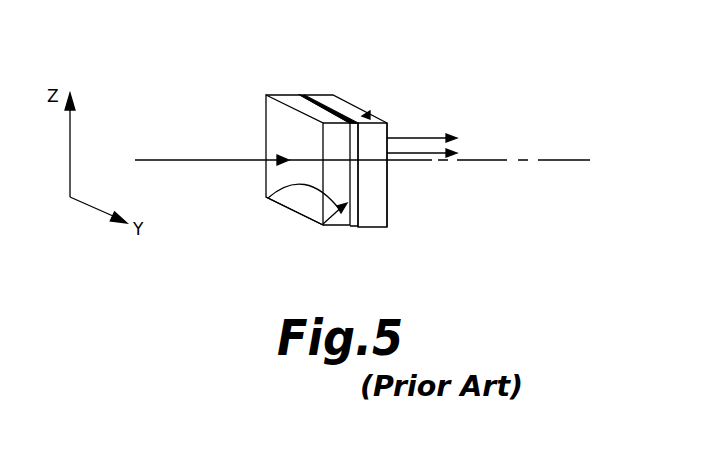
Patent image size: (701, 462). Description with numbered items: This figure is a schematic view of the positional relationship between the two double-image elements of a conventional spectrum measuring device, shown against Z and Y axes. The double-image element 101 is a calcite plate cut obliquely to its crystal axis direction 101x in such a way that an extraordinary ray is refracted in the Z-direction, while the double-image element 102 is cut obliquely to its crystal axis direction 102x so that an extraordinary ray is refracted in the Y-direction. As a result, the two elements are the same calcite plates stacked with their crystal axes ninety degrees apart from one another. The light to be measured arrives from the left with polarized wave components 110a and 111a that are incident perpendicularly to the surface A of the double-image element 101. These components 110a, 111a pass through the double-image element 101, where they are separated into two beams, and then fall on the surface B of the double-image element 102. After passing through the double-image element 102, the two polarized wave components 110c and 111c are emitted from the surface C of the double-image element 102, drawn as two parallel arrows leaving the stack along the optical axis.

The double-image element 101 is at (288, 99).
The double-image element 102 is at (328, 98).
The crystal axis direction 101x is at (268, 200).
The crystal axis direction 102x is at (368, 115).
The polarized wave component 110a is at (211, 150).
The polarized wave component 111a is at (391, 147).
The polarized wave component 110c is at (457, 137).
The polarized wave component 111c is at (457, 152).
The surface A is at (308, 208).
The surface B is at (349, 226).
The surface C is at (387, 212).